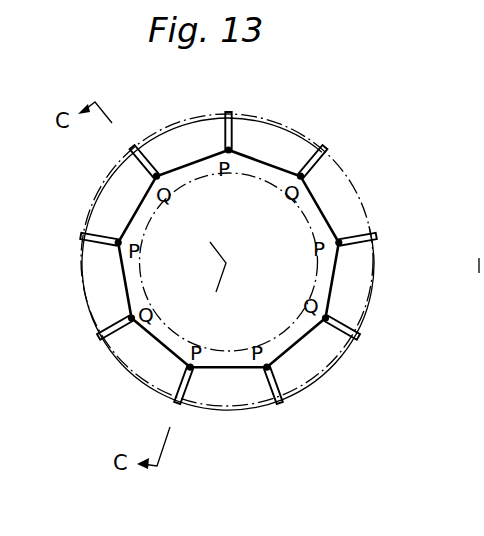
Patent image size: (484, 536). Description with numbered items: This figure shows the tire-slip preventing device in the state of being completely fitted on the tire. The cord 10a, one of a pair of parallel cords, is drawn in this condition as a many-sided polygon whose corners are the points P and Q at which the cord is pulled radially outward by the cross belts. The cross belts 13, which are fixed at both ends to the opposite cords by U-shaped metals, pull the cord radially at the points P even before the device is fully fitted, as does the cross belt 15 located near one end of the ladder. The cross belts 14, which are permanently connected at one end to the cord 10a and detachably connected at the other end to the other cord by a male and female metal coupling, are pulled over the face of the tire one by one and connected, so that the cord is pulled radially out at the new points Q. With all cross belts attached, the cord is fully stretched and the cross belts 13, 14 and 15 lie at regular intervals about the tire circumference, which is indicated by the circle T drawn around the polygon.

The cord 10a is at (328, 211).
The cross belt 13 is at (234, 112).
The cross belt 14 is at (131, 146).
The cross belt 15 is at (283, 404).
The tangent circle T is at (350, 308).